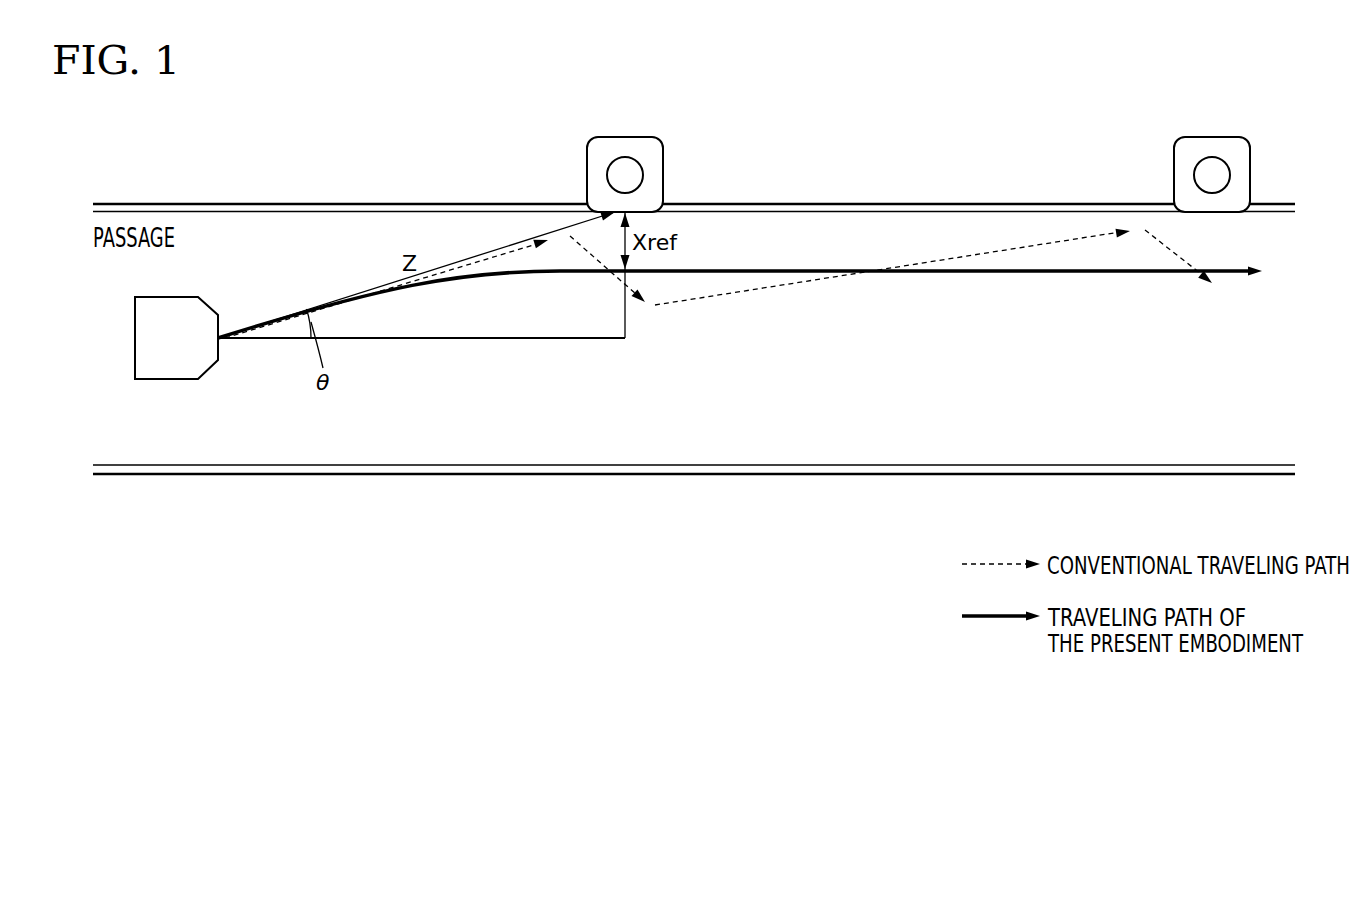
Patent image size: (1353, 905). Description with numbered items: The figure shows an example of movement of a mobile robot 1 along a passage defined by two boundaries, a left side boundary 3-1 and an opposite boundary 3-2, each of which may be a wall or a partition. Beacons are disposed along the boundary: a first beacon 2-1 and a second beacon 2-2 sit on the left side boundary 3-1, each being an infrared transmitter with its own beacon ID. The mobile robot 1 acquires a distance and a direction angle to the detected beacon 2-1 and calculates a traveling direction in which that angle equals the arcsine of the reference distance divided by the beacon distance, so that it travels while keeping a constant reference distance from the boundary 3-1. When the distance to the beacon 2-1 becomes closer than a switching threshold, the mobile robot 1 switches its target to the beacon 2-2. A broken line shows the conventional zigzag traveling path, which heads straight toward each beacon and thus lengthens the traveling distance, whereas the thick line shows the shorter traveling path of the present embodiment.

The mobile robot 1 is at (169, 381).
The beacon 2-1 is at (622, 135).
The beacon 2-2 is at (1210, 135).
The left side boundary 3-1 is at (192, 203).
The boundary 3-2 is at (192, 476).